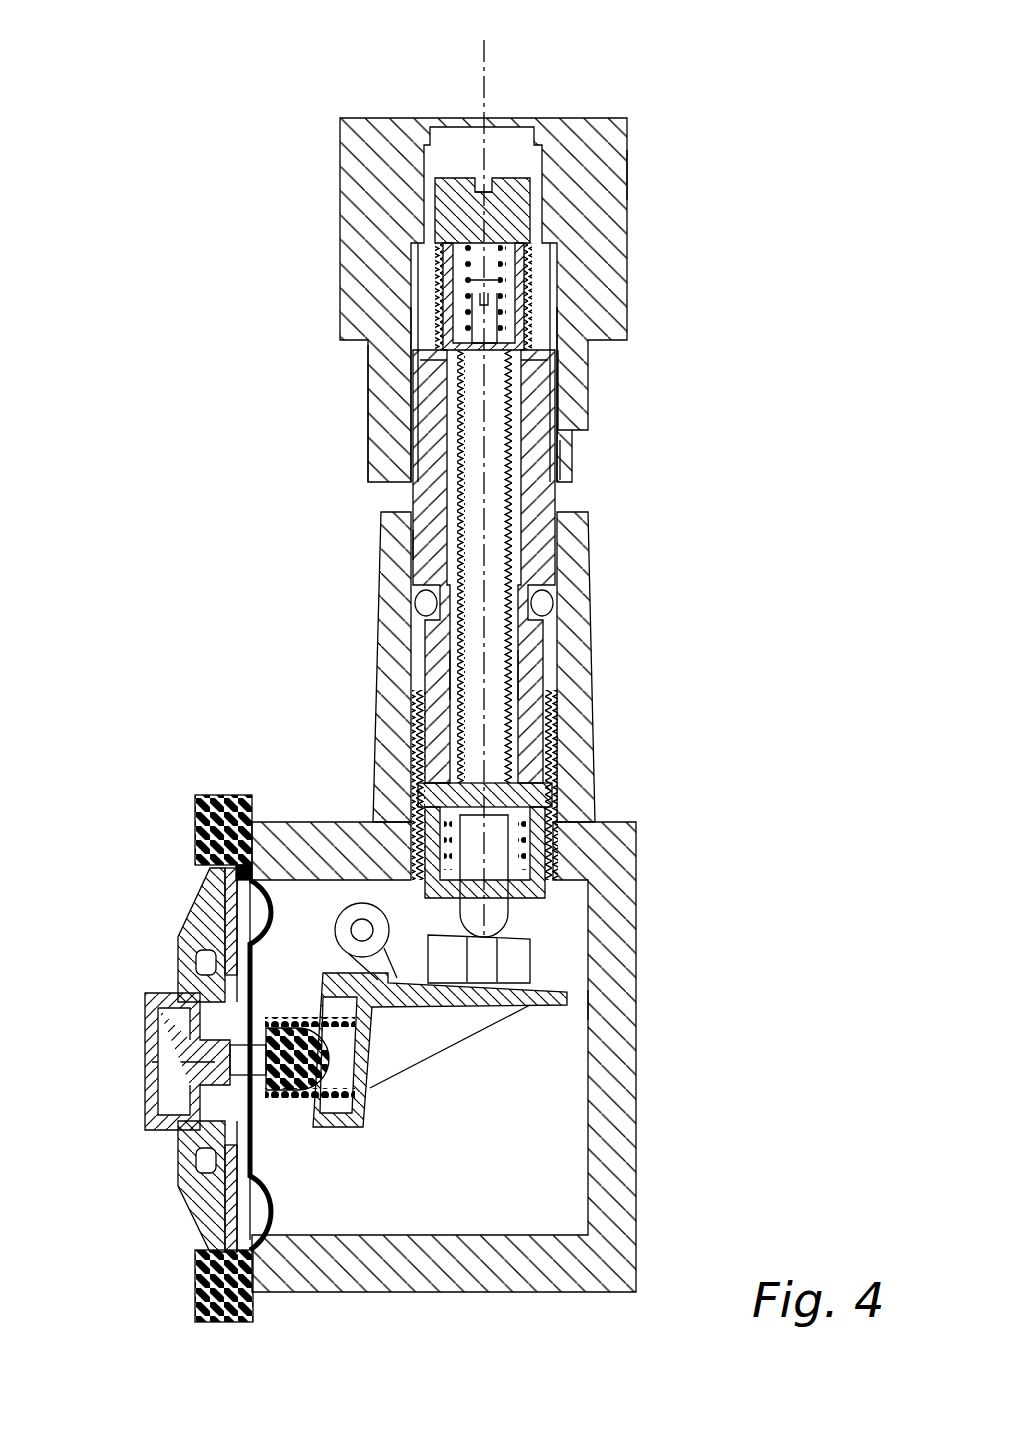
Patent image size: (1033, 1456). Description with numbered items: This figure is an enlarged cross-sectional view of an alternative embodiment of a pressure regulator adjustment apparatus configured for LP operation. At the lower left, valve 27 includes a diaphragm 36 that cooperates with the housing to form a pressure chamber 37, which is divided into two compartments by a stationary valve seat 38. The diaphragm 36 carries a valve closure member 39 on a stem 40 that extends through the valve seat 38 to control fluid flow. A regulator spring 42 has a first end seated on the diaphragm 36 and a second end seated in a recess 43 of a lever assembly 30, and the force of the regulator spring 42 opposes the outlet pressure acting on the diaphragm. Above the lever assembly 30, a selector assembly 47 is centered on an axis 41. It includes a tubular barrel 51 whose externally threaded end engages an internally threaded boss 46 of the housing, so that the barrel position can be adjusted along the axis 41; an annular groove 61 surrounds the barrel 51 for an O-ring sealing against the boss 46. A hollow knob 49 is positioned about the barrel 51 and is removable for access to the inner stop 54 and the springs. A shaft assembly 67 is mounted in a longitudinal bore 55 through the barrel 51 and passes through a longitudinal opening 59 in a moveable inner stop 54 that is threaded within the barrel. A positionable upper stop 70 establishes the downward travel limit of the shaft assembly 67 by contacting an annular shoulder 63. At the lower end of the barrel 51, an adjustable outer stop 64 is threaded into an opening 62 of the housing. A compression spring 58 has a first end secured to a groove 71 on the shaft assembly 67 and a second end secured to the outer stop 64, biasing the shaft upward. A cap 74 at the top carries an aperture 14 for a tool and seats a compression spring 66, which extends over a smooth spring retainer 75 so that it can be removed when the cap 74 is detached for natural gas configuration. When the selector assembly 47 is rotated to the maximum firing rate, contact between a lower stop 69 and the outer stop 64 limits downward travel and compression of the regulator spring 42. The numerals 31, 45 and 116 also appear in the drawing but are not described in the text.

The aperture 14 is at (488, 182).
The valve 27 is at (135, 1025).
The lever assembly 30 is at (546, 1005).
The pivot pin 31 is at (362, 930).
The diaphragm 36 is at (268, 1200).
The pressure chamber 37 is at (216, 891).
The valve seat 38 is at (181, 1168).
The valve closure member 39 is at (165, 1060).
The stem 40 is at (262, 1030).
The axis 41 is at (490, 42).
The regulator spring 42 is at (300, 1101).
The recess 43 is at (356, 1122).
The neck portion 45 is at (376, 462).
The threaded boss 46 is at (585, 682).
The selector assembly 47 is at (684, 183).
The knob 49 is at (362, 210).
The tubular barrel 51 is at (556, 496).
The inner stop 54 is at (580, 386).
The longitudinal bore 55 is at (562, 655).
The compression spring 58 is at (554, 805).
The longitudinal opening 59 is at (441, 418).
The annular groove 61 is at (578, 608).
The opening 62 is at (602, 921).
The annular shoulder 63 is at (433, 598).
The outer stop 64 is at (572, 857).
The compression spring 66 is at (520, 308).
The shaft assembly 67 is at (451, 652).
The lower stop 69 is at (451, 742).
The upper stop 70 is at (416, 552).
The groove 71 is at (441, 785).
The cap 74 is at (446, 208).
The spring retainer 75 is at (468, 318).
The chamber wall 116 is at (613, 1015).